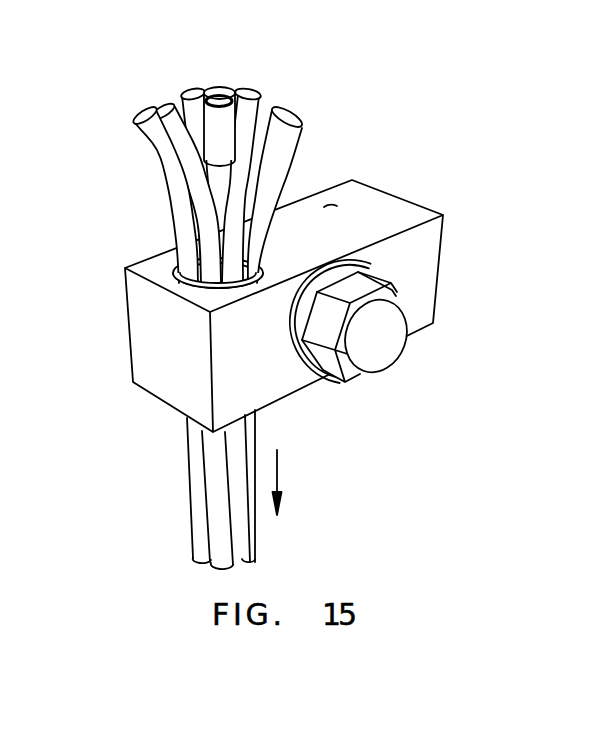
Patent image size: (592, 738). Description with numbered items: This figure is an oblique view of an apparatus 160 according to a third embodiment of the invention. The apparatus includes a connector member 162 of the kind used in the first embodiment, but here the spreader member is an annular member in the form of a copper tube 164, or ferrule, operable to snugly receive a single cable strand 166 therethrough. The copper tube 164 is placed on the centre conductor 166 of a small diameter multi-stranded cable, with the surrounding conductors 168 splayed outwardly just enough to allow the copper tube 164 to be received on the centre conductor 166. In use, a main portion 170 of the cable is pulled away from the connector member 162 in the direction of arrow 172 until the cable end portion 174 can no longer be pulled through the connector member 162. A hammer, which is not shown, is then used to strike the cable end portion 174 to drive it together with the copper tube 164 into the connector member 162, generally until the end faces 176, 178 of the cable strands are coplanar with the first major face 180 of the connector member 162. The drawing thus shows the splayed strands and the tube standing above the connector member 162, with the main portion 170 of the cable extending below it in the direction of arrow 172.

The apparatus 160 is at (271, 286).
The connector member 162 is at (397, 213).
The copper tube 164 is at (237, 99).
The single cable strand 166 is at (217, 85).
The surrounding conductors 168 is at (295, 138).
The main portion of the cable 170 is at (190, 483).
The arrow 172 is at (301, 482).
The cable end portion 174 is at (165, 183).
The end face 176 is at (197, 92).
The end face 178 is at (167, 103).
The first major face 180 is at (333, 203).